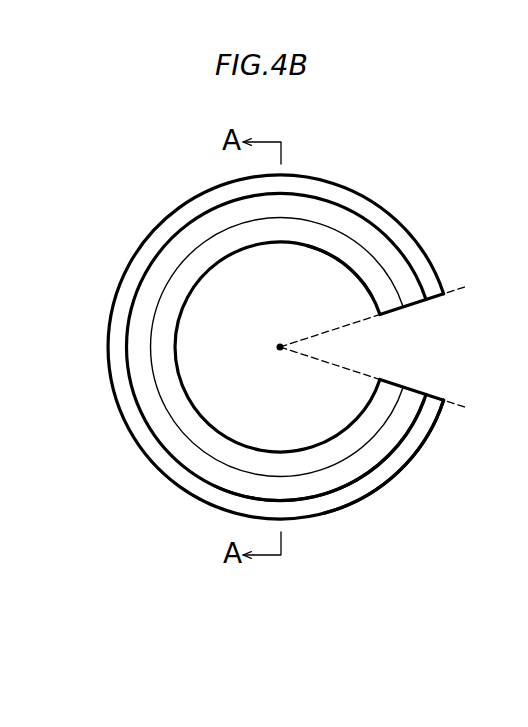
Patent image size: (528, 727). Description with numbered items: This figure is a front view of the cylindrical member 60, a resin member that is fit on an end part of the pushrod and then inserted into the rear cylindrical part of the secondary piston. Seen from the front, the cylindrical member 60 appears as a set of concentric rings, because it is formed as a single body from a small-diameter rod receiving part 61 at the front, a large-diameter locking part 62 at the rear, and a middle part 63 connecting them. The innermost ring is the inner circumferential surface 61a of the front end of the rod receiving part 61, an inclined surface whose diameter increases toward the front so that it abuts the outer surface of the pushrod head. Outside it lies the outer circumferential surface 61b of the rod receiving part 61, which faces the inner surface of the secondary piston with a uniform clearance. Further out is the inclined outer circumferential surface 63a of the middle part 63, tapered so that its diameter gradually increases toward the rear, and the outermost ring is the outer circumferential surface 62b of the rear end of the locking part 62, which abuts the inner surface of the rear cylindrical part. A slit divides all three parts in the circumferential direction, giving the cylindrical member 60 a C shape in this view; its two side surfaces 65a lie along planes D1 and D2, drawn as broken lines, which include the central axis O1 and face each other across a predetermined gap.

The cylindrical member 60 is at (269, 341).
The rod receiving part 61 is at (135, 290).
The inner circumferential surface 61a is at (347, 253).
The outer circumferential surface 61b is at (327, 503).
The locking part 62 is at (111, 374).
The outer circumferential surface 62b is at (423, 443).
The middle part 63 is at (114, 330).
The inclined outer circumferential surface 63a is at (373, 480).
The side surfaces 65a is at (410, 308).
The central axis O1 is at (279, 346).
The plane D1 is at (390, 309).
The plane D2 is at (390, 386).